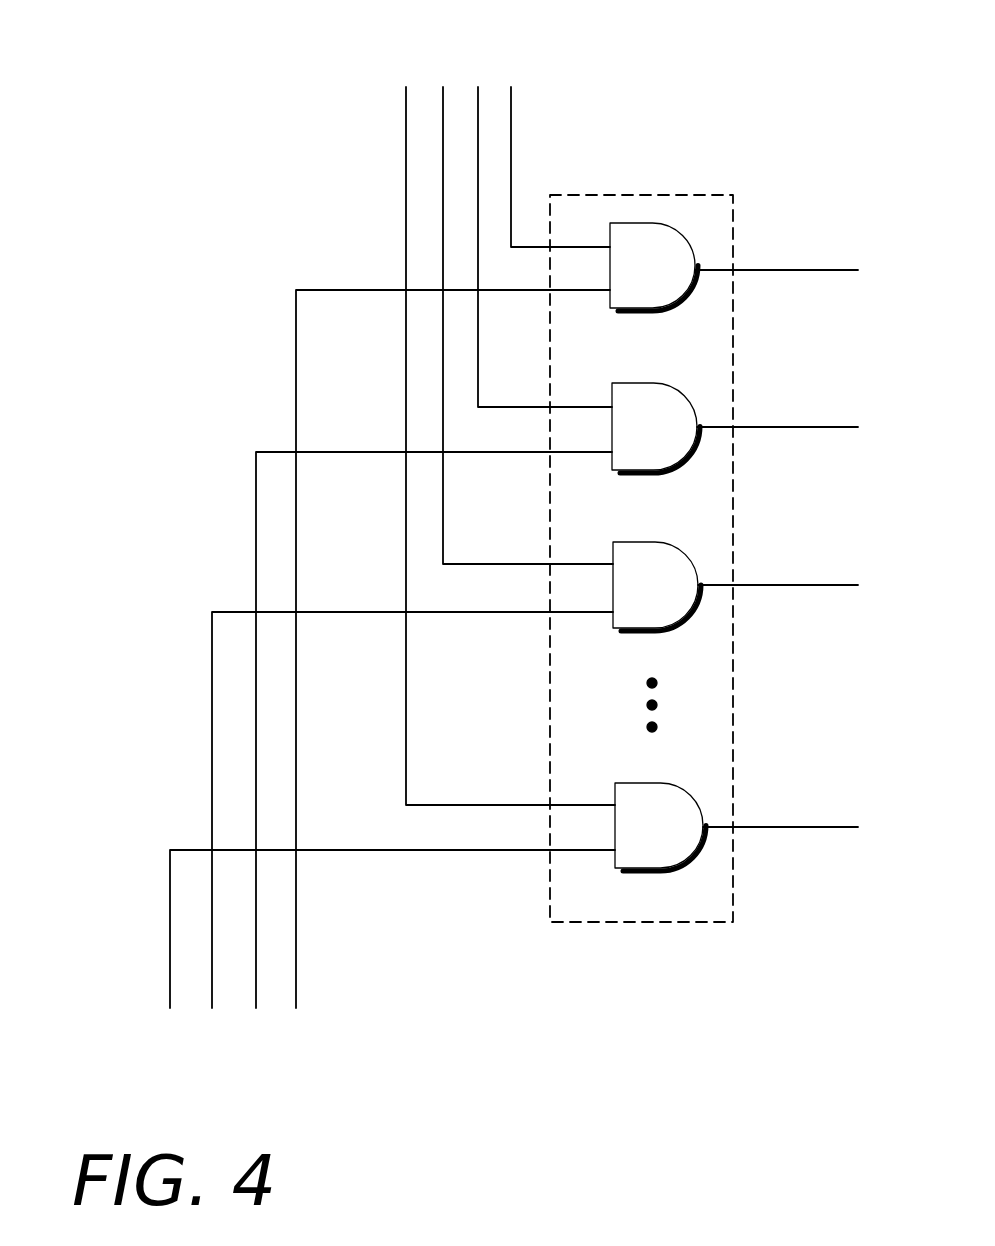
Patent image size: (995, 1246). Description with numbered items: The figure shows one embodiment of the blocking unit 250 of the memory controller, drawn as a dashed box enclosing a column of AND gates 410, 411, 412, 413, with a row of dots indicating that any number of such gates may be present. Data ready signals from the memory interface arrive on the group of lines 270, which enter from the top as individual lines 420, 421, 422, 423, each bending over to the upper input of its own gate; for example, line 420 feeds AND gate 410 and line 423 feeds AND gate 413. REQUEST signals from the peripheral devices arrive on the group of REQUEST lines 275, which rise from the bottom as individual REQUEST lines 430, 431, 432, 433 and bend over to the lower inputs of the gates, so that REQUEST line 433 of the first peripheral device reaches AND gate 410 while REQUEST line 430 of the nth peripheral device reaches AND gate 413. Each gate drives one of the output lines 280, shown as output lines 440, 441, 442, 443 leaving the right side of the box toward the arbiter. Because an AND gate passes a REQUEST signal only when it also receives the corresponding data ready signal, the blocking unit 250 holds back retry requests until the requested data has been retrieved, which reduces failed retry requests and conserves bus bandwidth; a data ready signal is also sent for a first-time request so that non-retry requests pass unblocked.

The blocking unit 250 is at (682, 196).
The line 270 is at (338, 175).
The REQUEST lines 275 is at (117, 962).
The lines 280 is at (835, 840).
The AND gate 410 is at (666, 274).
The AND gate 411 is at (668, 434).
The AND gate 412 is at (669, 593).
The AND gate 413 is at (671, 834).
The line 420 is at (511, 110).
The line 421 is at (478, 100).
The line 422 is at (443, 100).
The line 423 is at (406, 112).
The REQUEST line 430 is at (170, 975).
The REQUEST line 431 is at (212, 1002).
The REQUEST line 432 is at (256, 998).
The REQUEST line 433 is at (296, 982).
The output line 440 is at (776, 255).
The output line 441 is at (777, 413).
The output line 442 is at (778, 571).
The output line 443 is at (780, 814).